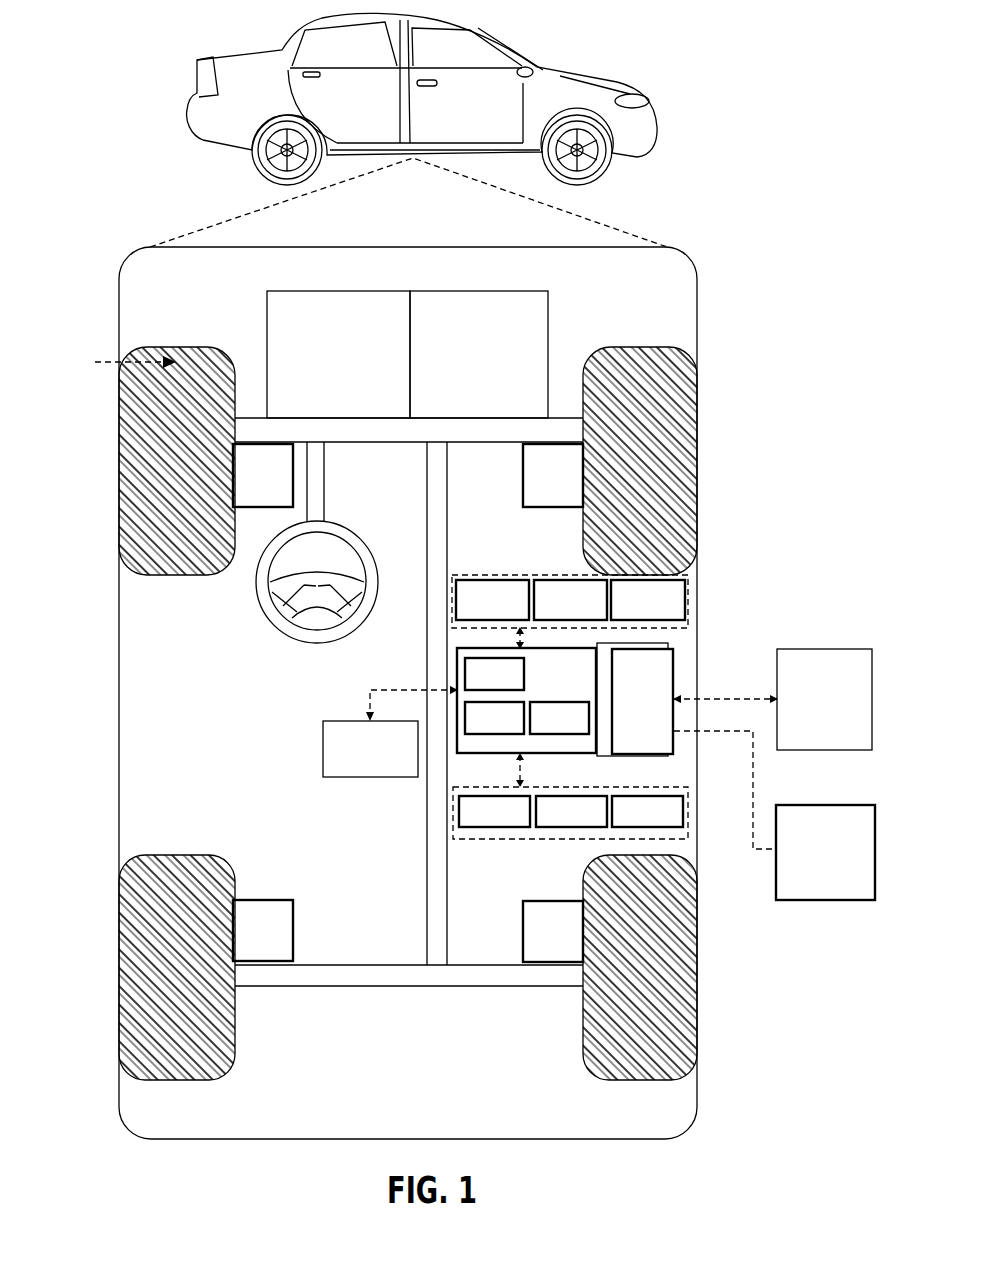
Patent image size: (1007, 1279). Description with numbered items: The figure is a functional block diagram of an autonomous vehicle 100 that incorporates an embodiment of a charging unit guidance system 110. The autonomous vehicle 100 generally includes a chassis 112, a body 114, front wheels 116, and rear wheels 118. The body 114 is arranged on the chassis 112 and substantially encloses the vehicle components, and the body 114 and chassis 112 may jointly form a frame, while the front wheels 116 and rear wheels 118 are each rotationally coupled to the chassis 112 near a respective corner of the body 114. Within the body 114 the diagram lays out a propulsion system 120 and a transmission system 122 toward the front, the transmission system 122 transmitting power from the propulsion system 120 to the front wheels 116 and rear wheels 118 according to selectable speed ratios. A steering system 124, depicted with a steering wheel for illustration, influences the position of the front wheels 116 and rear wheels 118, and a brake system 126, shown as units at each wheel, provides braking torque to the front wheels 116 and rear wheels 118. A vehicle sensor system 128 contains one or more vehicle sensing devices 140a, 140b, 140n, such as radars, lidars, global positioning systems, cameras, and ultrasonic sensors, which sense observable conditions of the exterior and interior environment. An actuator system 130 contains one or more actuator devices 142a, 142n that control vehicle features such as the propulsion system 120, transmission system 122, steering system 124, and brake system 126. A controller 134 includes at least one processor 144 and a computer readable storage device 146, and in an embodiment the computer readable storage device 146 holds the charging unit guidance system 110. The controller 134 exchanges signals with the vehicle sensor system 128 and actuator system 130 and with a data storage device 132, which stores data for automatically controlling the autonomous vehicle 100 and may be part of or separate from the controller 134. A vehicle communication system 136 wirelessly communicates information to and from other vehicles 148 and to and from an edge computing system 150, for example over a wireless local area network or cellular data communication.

The autonomous vehicle 100 is at (190, 85).
The charging unit guidance system 110 is at (481, 683).
The chassis 112 is at (427, 828).
The body 114 is at (119, 660).
The front wheels 116 is at (178, 347).
The rear wheels 118 is at (178, 1082).
The propulsion system 120 is at (325, 363).
The transmission system 122 is at (463, 362).
The steering system 124 is at (329, 498).
The brake system 126 is at (250, 485).
The vehicle sensor system 128 is at (570, 578).
The actuator system 130 is at (570, 832).
The data storage device 132 is at (353, 756).
The controller 134 is at (526, 700).
The vehicle communication system 136 is at (630, 709).
The vehicle sensing device 140a is at (510, 609).
The vehicle sensing device 140b is at (588, 609).
The vehicle sensing device 140n is at (666, 609).
The actuator device 142a is at (478, 821).
The actuator device 142n is at (631, 821).
The processor 144 is at (481, 727).
The computer readable storage device 146 is at (546, 727).
The other vehicles 148 is at (810, 707).
The edge computing system 150 is at (812, 862).